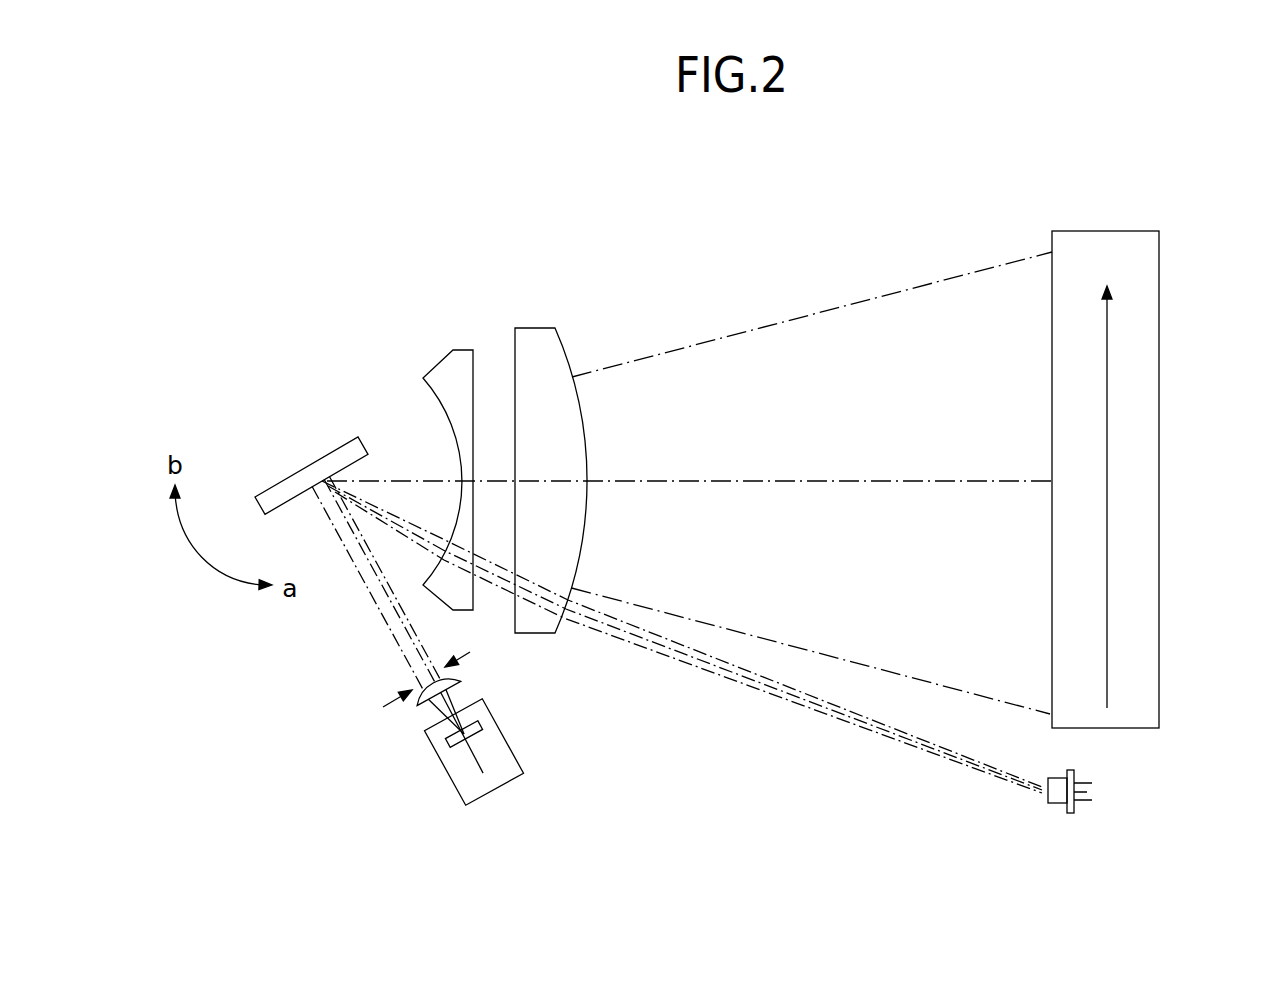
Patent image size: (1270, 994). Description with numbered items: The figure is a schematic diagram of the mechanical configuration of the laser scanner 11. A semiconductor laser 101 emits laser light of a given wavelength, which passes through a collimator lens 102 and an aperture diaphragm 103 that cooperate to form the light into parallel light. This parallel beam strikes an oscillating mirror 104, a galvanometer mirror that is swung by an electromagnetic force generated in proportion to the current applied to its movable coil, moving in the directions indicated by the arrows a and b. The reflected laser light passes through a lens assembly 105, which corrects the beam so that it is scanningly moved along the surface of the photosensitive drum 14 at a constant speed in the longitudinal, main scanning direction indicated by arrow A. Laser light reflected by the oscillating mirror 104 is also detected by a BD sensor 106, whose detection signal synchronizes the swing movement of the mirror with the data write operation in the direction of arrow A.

The laser scanner 11 is at (519, 220).
The photosensitive drum 14 is at (1159, 402).
The semiconductor laser 101 is at (495, 710).
The collimator lens 102 is at (417, 710).
The aperture diaphragm 103 is at (462, 662).
The oscillating mirror 104 is at (323, 456).
The lens assembly 105 is at (443, 316).
The BD sensor 106 is at (1057, 804).